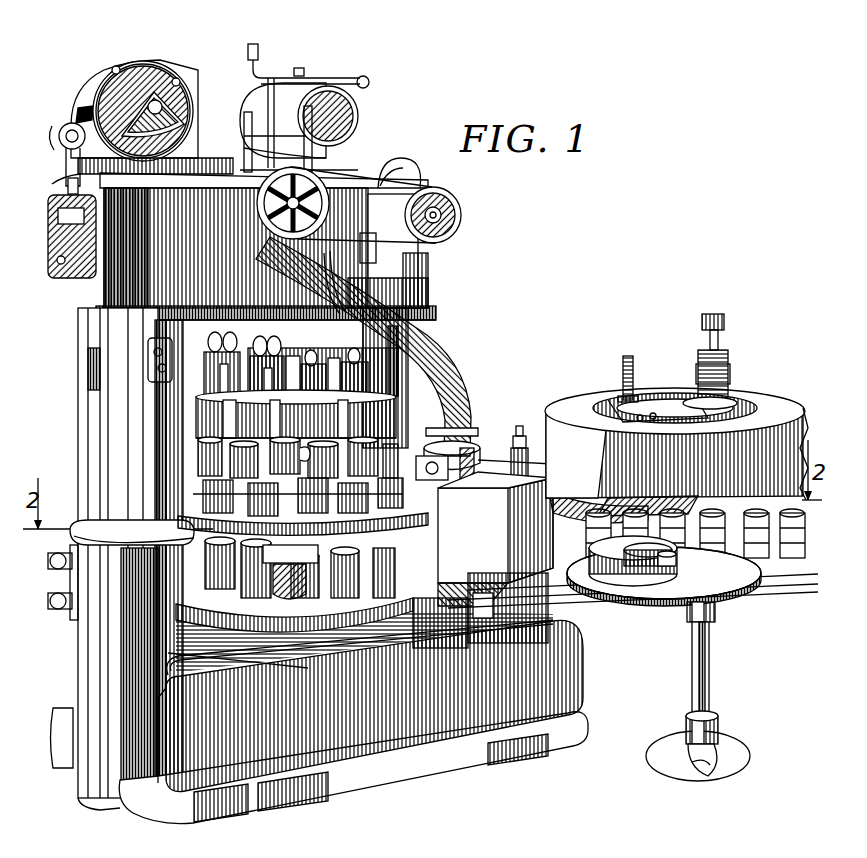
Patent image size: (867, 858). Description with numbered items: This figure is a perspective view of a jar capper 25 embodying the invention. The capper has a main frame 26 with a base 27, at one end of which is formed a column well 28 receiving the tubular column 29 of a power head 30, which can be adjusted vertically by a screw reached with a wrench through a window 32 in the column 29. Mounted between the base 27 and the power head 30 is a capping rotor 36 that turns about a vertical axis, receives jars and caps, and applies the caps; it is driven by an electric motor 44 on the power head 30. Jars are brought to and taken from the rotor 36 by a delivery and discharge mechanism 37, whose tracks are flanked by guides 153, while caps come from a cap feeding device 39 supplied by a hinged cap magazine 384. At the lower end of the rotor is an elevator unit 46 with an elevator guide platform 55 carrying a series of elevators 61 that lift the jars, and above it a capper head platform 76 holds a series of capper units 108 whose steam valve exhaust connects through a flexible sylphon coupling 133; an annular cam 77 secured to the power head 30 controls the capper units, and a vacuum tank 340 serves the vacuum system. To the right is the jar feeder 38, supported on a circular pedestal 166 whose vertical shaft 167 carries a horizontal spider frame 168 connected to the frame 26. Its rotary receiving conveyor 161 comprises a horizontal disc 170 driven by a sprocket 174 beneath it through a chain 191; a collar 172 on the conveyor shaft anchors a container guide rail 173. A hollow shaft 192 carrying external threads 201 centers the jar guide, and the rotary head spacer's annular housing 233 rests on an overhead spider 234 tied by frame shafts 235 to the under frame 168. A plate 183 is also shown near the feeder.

The jar capper 25 is at (436, 72).
The electric motor 44 is at (145, 58).
The vacuum tank 340 is at (348, 100).
The power head 30 is at (50, 184).
The capping rotor 36 is at (366, 407).
The cap magazine 384 is at (460, 394).
The cap feeding device 39 is at (480, 418).
The annular housing 233 is at (556, 420).
The frame shafts 235 is at (620, 350).
The jar feeder 38 is at (654, 378).
The hollow shaft 192 is at (716, 356).
The external threads 201 is at (718, 376).
The overhead spider 234 is at (676, 404).
The window 32 is at (76, 359).
The tubular column 29 is at (78, 424).
The column well 28 is at (70, 665).
The annular cam 77 is at (226, 320).
The capper head platform 76 is at (248, 416).
The capper units 108 is at (188, 440).
The plate 183 is at (538, 492).
The guides 153 is at (303, 523).
The delivery and discharge mechanism 37 is at (172, 517).
The collar 172 is at (662, 548).
The horizontal disc 170 is at (664, 573).
The container guide rail 173 is at (620, 576).
The rotary receiving conveyor 161 is at (742, 578).
The sprocket 174 is at (648, 603).
The chain 191 is at (672, 603).
The horizontal spider frame 168 is at (712, 604).
The vertical shaft 167 is at (708, 662).
The circular pedestal 166 is at (716, 724).
The elevators 61 is at (206, 590).
The elevator guide platform 55 is at (294, 615).
The flexible sylphon coupling 133 is at (360, 643).
The elevator unit 46 is at (252, 618).
The main frame 26 is at (96, 790).
The base 27 is at (368, 776).